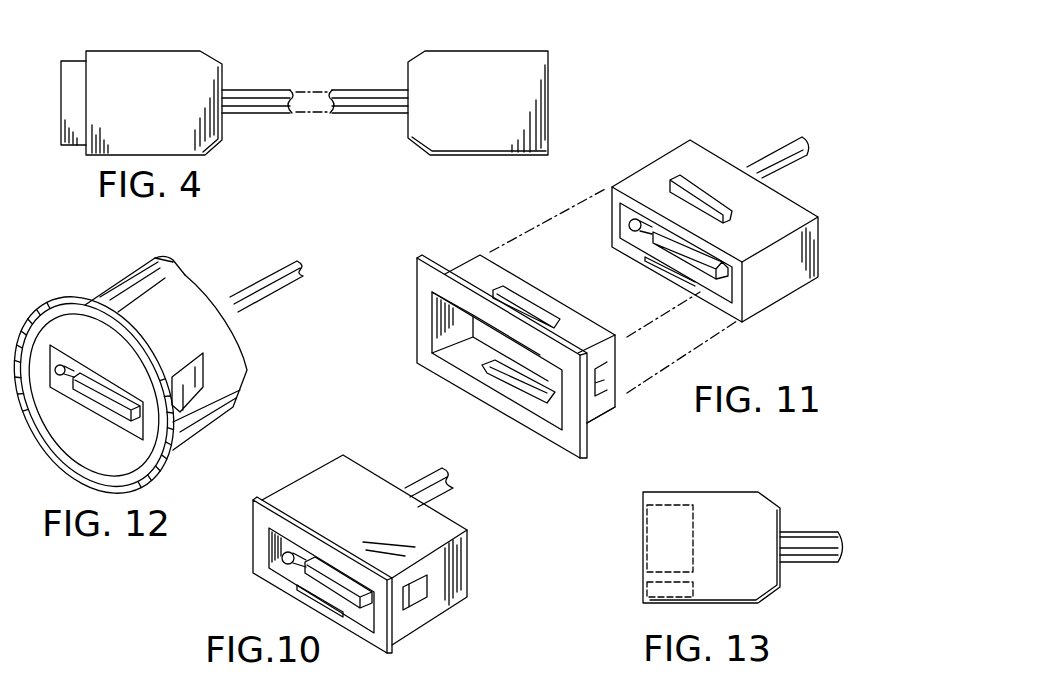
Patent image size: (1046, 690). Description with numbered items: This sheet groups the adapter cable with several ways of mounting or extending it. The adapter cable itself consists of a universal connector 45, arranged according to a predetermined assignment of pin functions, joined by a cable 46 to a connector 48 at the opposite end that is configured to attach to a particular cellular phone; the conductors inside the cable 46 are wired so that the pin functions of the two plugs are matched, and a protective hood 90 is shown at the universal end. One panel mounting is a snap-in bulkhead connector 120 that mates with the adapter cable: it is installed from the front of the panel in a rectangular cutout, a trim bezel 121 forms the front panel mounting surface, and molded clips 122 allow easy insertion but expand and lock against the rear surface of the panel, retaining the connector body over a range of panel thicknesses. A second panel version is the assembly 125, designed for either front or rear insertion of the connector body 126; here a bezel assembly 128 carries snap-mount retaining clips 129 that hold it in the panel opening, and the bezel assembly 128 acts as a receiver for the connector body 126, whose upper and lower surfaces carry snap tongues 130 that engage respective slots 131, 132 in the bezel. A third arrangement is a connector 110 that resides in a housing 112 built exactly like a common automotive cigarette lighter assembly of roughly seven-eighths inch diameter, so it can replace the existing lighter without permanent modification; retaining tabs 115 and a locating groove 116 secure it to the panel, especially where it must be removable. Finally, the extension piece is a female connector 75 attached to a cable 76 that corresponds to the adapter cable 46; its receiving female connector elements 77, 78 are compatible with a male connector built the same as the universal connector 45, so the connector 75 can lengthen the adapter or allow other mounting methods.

In FIG. 4, the protective hood 90 is at (73, 61).
In FIG. 4, the universal connector 45 is at (172, 51).
In FIG. 4, the cable 46 is at (278, 90).
In FIG. 4, the connector 48 is at (425, 62).
In FIG. 11, the assembly 125 is at (446, 237).
In FIG. 11, the connector body 126 is at (713, 170).
In FIG. 11, the bezel assembly 128 is at (602, 411).
In FIG. 11, the snap-mount retaining clip 129 is at (598, 373).
In FIG. 11, the snap tongue 130 is at (676, 182).
In FIG. 11, the slot 131 is at (520, 310).
In FIG. 11, the slot 132 is at (512, 378).
In FIG. 12, the connector 110 is at (229, 268).
In FIG. 12, the housing 112 is at (63, 455).
In FIG. 12, the retaining tab 115 is at (195, 383).
In FIG. 12, the locating groove 116 is at (152, 283).
In FIG. 10, the connector 120 is at (433, 527).
In FIG. 10, the trim bezel 121 is at (267, 578).
In FIG. 10, the molded clip 122 is at (417, 597).
In FIG. 13, the connector 75 is at (730, 507).
In FIG. 13, the cable 76 is at (822, 538).
In FIG. 13, the receiving female connector element 77 is at (652, 523).
In FIG. 13, the receiving female connector element 78 is at (650, 587).